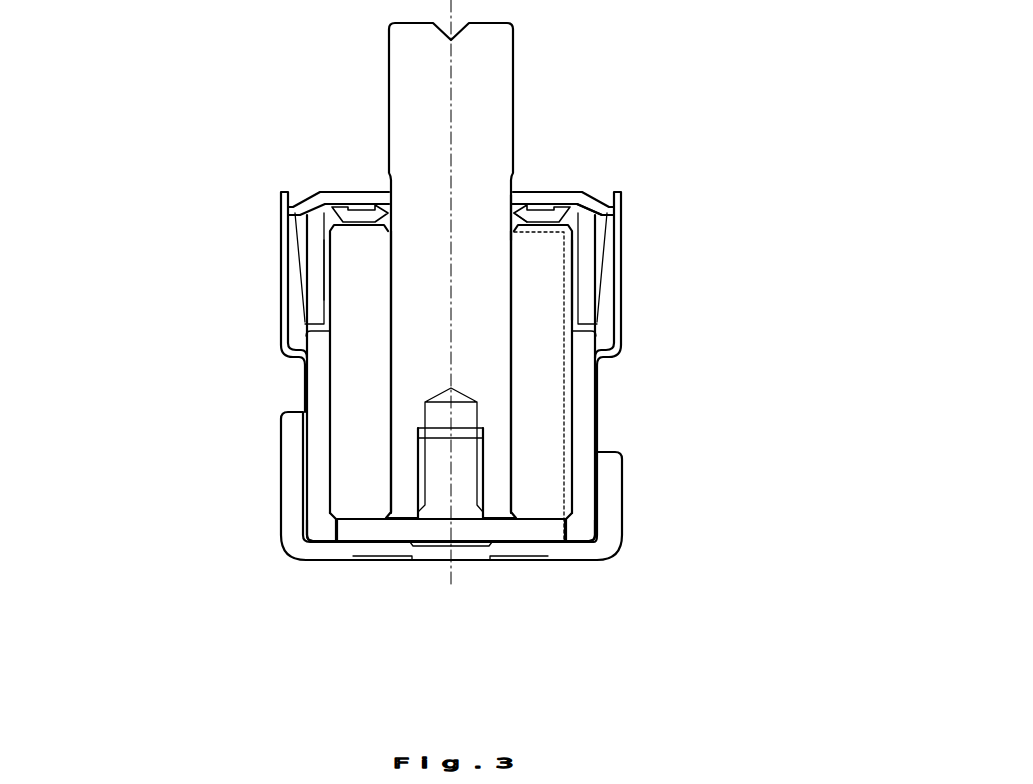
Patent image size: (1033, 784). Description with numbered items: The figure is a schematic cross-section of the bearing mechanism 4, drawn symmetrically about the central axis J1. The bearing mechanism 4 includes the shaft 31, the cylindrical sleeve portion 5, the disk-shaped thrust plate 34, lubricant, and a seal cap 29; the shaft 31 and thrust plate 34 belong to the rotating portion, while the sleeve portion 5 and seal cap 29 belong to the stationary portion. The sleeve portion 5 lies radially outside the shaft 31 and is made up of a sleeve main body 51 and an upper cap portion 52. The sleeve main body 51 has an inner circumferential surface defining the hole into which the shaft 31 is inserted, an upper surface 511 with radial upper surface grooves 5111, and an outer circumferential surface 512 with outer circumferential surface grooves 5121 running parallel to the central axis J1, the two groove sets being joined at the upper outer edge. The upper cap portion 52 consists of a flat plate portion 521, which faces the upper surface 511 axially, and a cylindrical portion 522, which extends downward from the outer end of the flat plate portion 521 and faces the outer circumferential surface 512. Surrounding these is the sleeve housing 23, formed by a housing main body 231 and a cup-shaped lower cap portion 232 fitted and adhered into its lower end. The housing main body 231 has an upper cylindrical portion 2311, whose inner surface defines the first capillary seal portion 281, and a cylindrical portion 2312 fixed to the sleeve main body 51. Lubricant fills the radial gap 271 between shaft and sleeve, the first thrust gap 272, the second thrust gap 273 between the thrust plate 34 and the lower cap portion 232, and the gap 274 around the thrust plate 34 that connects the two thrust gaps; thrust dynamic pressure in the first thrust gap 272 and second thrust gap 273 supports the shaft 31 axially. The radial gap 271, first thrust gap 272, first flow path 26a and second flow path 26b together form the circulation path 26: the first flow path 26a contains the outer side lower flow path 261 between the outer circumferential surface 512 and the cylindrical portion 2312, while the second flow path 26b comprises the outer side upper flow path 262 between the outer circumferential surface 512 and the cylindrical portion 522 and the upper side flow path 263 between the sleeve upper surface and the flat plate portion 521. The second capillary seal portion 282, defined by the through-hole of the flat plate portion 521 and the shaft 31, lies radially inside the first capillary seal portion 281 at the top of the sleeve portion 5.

The bearing mechanism 4 is at (175, 74).
The central axis J1 is at (451, 88).
The shaft 31 is at (491, 108).
The thrust plate 34 is at (537, 530).
The sleeve housing 23 is at (423, 386).
The housing main body 231 is at (132, 262).
The upper cylindrical portion 2311 is at (298, 292).
The cylindrical portion 2312 is at (582, 403).
The lower cap portion 232 is at (608, 492).
The circulation path 26 is at (597, 325).
The outer side lower flow path 261 is at (568, 442).
The outer side upper flow path 262 is at (585, 307).
The upper side flow path 263 is at (540, 218).
The first flow path 26a is at (884, 441).
The second flow path 26b is at (876, 310).
The radial gap 271 is at (387, 373).
The first thrust gap 272 is at (365, 515).
The second thrust gap 273 is at (360, 540).
The gap 274 is at (308, 533).
The first capillary seal portion 281 is at (318, 265).
The second capillary seal portion 282 is at (518, 212).
The seal cap 29 is at (521, 217).
The sleeve portion 5 is at (458, 321).
The sleeve main body 51 is at (357, 428).
The upper surface 511 is at (442, 204).
The upper surface grooves 5111 is at (622, 198).
The outer circumferential surface 512 is at (328, 220).
The outer circumferential surface grooves 5121 is at (567, 278).
The upper cap portion 52 is at (674, 224).
The flat plate portion 521 is at (553, 212).
The cylindrical portion 522 is at (587, 286).